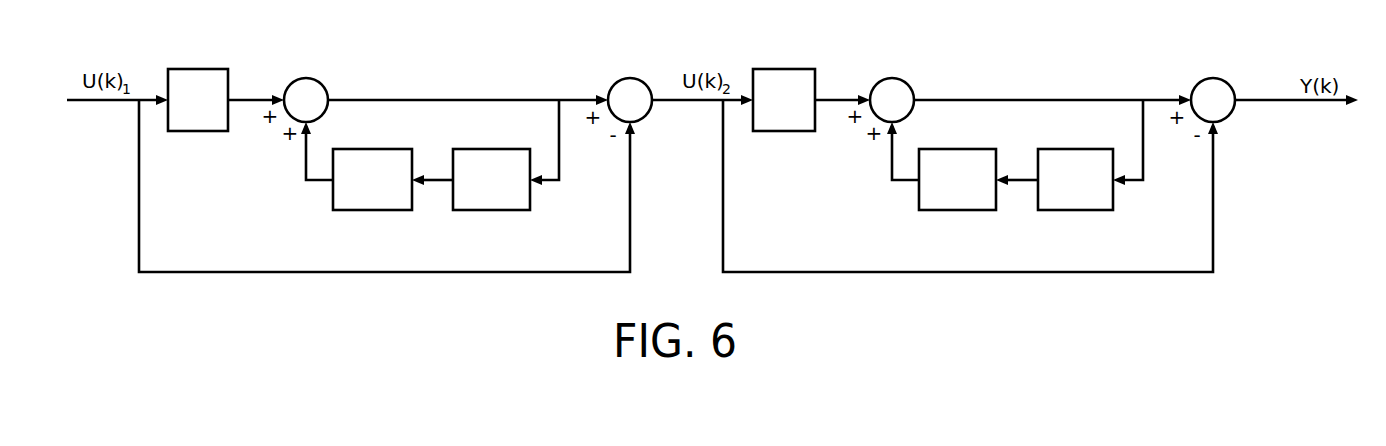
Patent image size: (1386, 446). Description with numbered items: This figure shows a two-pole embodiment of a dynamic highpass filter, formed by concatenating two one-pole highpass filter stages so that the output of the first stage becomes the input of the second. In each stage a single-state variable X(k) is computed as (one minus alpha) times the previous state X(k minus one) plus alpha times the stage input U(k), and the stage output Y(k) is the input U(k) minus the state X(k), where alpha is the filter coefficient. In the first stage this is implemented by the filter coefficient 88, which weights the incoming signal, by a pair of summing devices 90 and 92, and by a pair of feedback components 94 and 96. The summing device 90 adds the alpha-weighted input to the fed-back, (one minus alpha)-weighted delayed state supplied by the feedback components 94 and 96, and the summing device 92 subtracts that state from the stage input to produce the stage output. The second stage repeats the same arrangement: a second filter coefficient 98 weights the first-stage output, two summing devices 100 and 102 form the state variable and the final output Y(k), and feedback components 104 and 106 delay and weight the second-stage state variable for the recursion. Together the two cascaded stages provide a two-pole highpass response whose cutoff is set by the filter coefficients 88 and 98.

The filter coefficient 88 is at (218, 69).
The summing device 90 is at (321, 85).
The summing device 92 is at (646, 84).
The feedback component 94 is at (512, 210).
The feedback component 96 is at (390, 210).
The second filter coefficient 98 is at (803, 69).
The summing device 100 is at (907, 84).
The summing device 102 is at (1228, 84).
The feedback component 104 is at (1095, 210).
The feedback component 106 is at (975, 210).